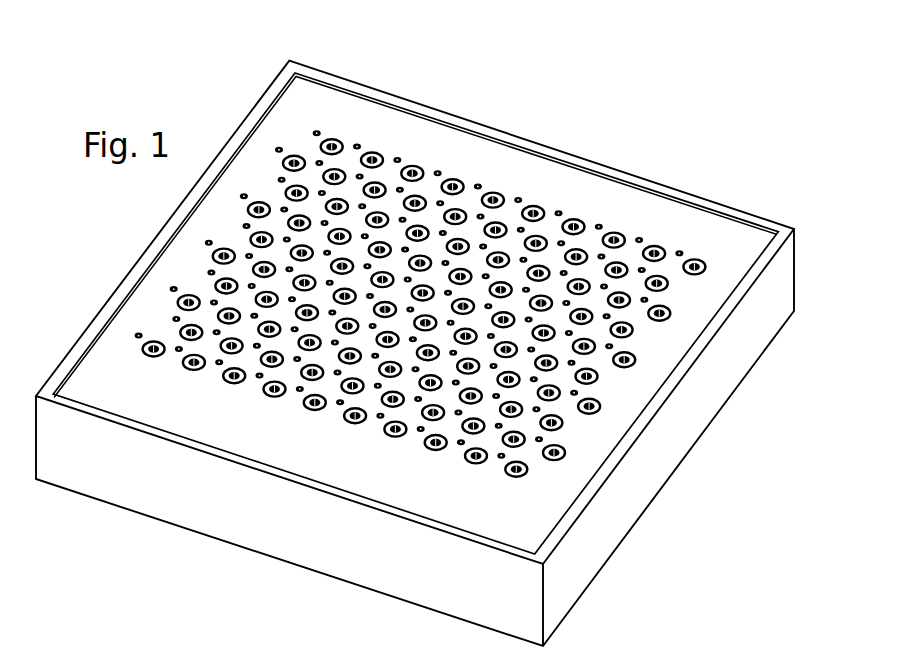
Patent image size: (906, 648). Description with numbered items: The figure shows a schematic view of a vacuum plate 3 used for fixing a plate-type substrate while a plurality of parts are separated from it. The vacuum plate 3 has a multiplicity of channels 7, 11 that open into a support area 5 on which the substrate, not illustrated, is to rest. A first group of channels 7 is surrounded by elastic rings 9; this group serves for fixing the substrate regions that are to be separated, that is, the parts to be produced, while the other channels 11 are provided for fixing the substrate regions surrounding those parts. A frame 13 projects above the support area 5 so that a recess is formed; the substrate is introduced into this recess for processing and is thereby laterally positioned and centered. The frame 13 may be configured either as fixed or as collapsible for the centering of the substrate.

The vacuum plate 3 is at (604, 98).
The support area 5 is at (618, 199).
The first group of channels 7 is at (428, 446).
The elastic rings 9 is at (469, 456).
The channels 11 is at (337, 406).
The frame 13 is at (414, 112).